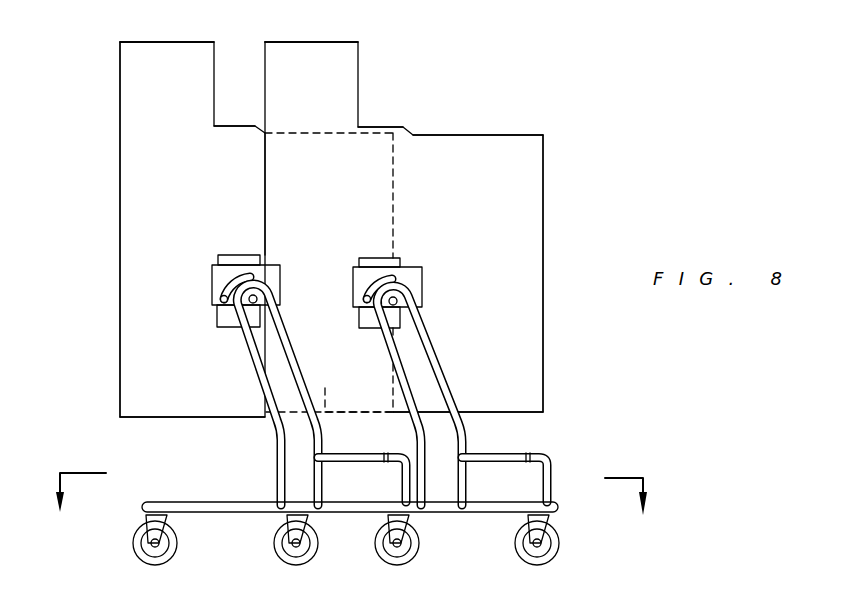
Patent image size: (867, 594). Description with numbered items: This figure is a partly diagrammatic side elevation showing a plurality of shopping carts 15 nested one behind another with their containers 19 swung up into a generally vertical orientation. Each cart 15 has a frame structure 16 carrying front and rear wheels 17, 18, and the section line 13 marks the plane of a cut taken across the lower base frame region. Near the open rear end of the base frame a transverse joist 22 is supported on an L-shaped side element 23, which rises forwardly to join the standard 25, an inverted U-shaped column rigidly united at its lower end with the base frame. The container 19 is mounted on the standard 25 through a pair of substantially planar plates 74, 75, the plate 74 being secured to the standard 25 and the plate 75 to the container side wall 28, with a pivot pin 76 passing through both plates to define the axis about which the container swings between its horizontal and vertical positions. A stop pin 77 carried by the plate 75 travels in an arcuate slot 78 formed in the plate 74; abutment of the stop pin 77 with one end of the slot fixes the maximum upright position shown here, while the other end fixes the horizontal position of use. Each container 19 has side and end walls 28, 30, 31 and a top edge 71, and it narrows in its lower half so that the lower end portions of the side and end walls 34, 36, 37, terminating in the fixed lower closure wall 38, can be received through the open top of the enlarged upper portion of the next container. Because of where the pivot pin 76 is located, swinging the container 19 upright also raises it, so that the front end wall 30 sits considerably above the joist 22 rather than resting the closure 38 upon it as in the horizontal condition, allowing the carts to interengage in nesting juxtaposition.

The section line 13- 13 is at (347, 497).
The shopping cart 15 is at (118, 41).
The frame structure 16 is at (140, 511).
The front wheels 17 is at (178, 548).
The rear wheels 18 is at (420, 544).
The container 19 is at (117, 172).
The joist 22 is at (370, 461).
The L-shaped side element 23 is at (401, 480).
The standard 25 is at (274, 432).
The side wall 28 is at (128, 348).
The end wall 30 is at (168, 418).
The end wall 31 is at (226, 125).
The lower end portion of side wall 34 is at (380, 198).
The lower end portion of end wall 36 is at (326, 400).
The lower end portion of end wall 37 is at (378, 129).
The fixed lower closure wall 38 is at (394, 172).
The panel top edge 71 is at (166, 41).
The plate 74 is at (212, 275).
The plate 75 is at (222, 255).
The pivot pin 76 is at (259, 297).
The stop pin 77 is at (221, 299).
The arcuate slot 78 is at (250, 274).